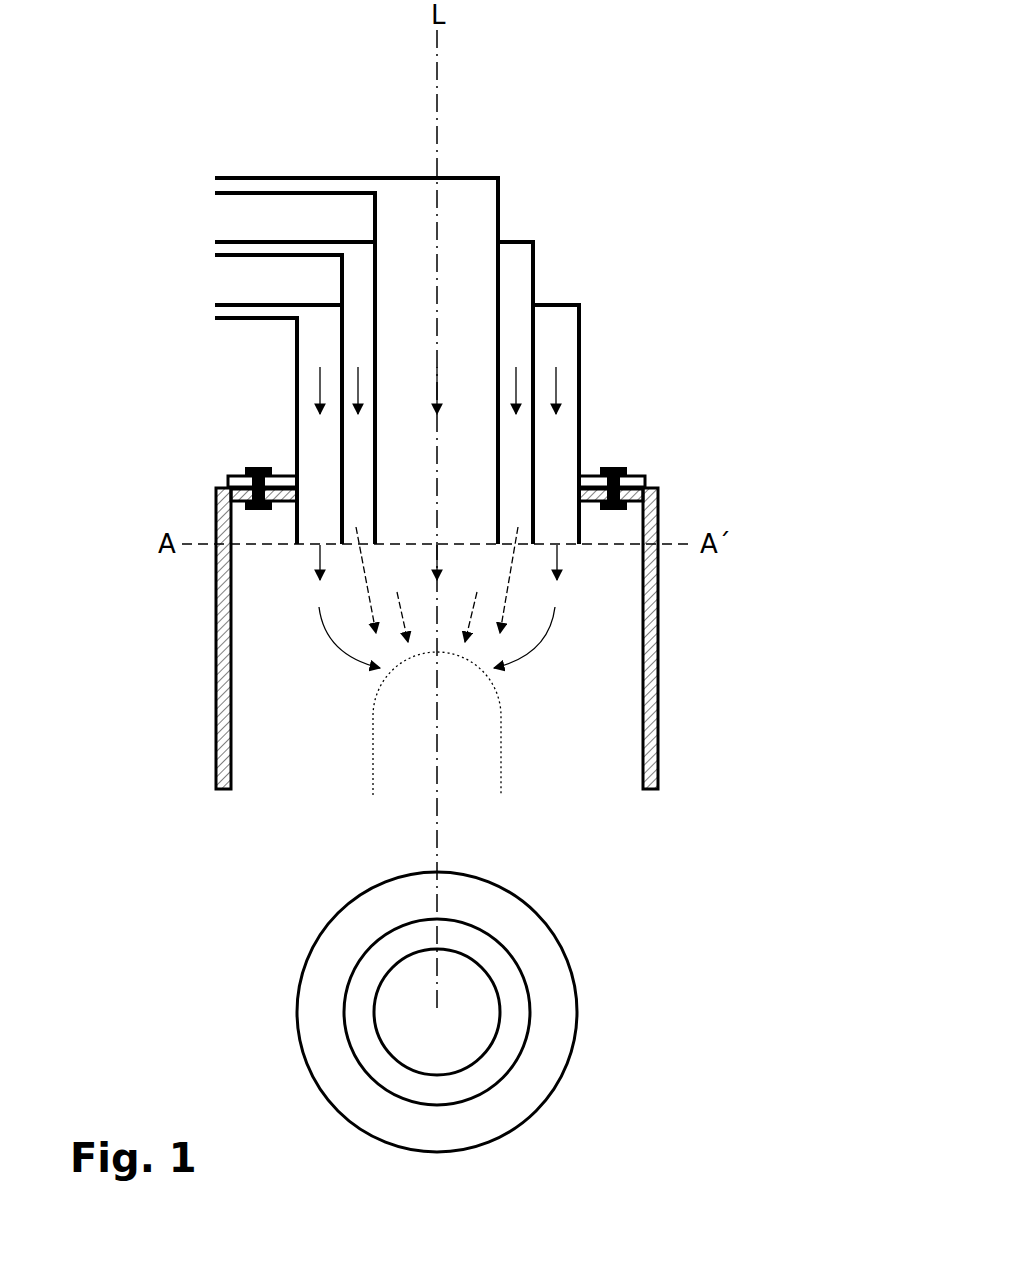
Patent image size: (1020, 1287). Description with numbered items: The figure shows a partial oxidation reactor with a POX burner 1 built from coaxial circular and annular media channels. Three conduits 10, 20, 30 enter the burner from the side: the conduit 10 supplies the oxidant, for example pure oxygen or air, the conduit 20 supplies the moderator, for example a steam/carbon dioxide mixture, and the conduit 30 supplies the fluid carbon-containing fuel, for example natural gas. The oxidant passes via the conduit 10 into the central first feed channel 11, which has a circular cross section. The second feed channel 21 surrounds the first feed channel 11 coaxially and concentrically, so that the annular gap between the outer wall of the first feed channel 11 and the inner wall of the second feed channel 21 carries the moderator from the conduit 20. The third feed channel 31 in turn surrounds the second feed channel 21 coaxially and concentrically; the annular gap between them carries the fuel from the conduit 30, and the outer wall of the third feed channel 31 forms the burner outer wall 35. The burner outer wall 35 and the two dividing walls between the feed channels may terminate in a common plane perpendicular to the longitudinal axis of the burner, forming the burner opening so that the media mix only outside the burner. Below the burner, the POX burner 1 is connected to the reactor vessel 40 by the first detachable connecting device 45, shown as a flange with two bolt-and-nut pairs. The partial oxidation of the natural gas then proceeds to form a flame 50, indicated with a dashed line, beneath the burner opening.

The POX burner 1 is at (640, 134).
The conduit 10 is at (330, 356).
The conduit 20 is at (348, 388).
The conduit 30 is at (371, 423).
The first feed channel 11 is at (470, 210).
The second feed channel 21 is at (515, 292).
The third feed channel 31 is at (567, 355).
The burner outer wall 35 is at (581, 393).
The reactor vessel 40 is at (215, 653).
The first detachable connecting device 45 is at (232, 478).
The flame 50 is at (372, 763).